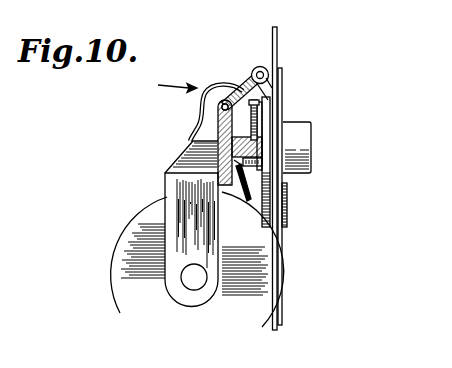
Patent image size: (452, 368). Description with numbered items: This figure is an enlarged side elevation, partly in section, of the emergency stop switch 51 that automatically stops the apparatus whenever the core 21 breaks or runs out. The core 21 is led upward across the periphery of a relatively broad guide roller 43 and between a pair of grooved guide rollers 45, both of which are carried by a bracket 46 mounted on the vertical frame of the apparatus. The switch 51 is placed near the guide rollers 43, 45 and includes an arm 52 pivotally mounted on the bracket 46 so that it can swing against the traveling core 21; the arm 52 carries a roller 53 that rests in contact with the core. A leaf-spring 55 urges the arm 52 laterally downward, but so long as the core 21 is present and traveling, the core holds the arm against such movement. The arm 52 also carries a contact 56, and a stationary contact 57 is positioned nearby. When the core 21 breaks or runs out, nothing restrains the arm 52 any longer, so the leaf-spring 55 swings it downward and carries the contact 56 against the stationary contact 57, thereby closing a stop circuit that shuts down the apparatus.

The core 21 is at (278, 43).
The guide roller 43 is at (128, 260).
The grooved guide rollers 45 is at (287, 222).
The bracket 46 is at (165, 175).
The switch 51 is at (166, 83).
The arm 52 is at (238, 88).
The roller 53 is at (257, 68).
The leaf-spring 55 is at (196, 112).
The contact 56 is at (263, 97).
The stationary contact 57 is at (257, 118).